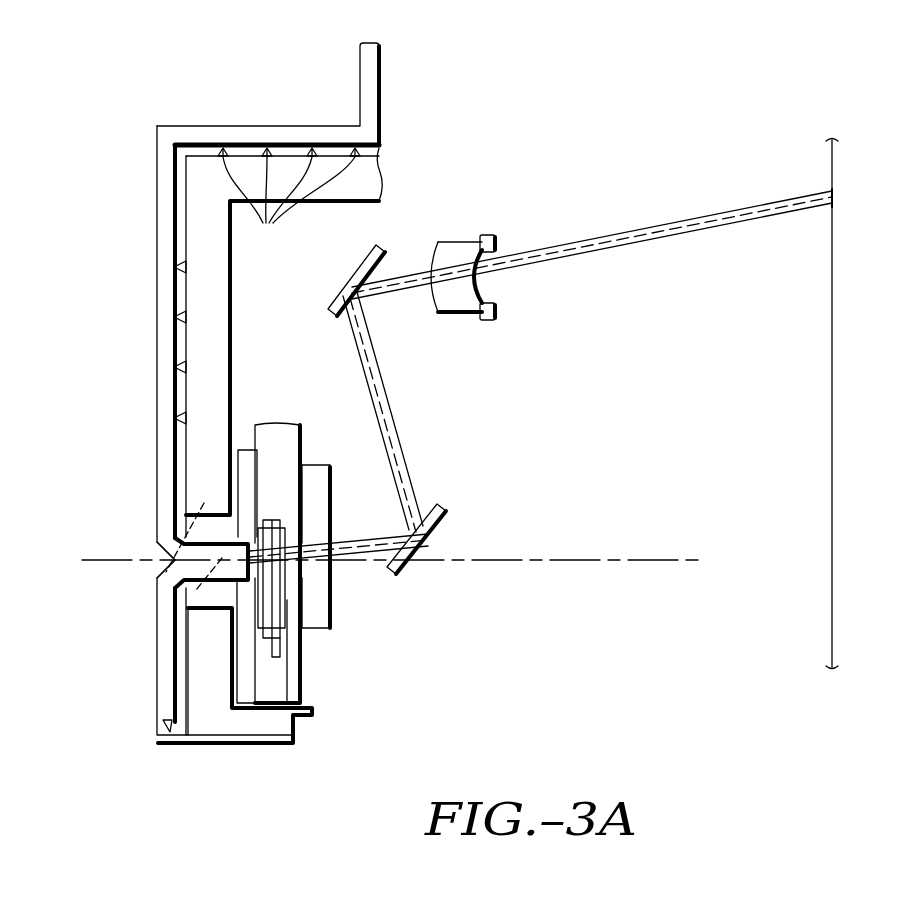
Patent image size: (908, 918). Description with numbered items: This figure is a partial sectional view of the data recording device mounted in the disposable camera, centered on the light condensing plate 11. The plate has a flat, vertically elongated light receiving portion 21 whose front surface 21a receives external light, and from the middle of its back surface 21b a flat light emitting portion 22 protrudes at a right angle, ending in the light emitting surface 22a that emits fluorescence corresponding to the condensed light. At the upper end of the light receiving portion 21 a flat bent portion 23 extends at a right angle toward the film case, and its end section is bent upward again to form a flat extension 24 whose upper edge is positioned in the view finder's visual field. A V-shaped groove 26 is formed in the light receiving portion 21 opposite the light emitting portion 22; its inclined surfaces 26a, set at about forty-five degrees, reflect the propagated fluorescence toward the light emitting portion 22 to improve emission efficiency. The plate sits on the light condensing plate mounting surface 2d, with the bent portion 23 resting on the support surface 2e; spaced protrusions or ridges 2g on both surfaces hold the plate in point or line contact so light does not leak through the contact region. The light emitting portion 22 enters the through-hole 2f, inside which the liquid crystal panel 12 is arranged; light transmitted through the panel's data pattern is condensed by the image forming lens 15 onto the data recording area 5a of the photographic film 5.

The flat extension 24 is at (373, 77).
The flat bent portion 23 is at (297, 130).
The support surface 2e is at (252, 147).
The protrusions or ridges 2g is at (180, 266).
The light receiving portion 21 is at (160, 274).
The surface of the light receiving portion 21a is at (160, 308).
The back surface of the light receiving portion 21b is at (181, 292).
The light condensing plate mounting surface 2d is at (178, 346).
The light condensing plate 11 is at (100, 343).
The V-shaped groove 26 is at (193, 524).
The inclined surfaces 26a is at (165, 570).
The light emitting portion 22 is at (170, 598).
The light emitting surface 22a is at (257, 587).
The through-hole 2f is at (210, 533).
The liquid crystal panel 12 is at (275, 680).
The image forming lens 15 is at (463, 313).
The photographic film 5 is at (832, 342).
The data recording area 5a is at (840, 178).